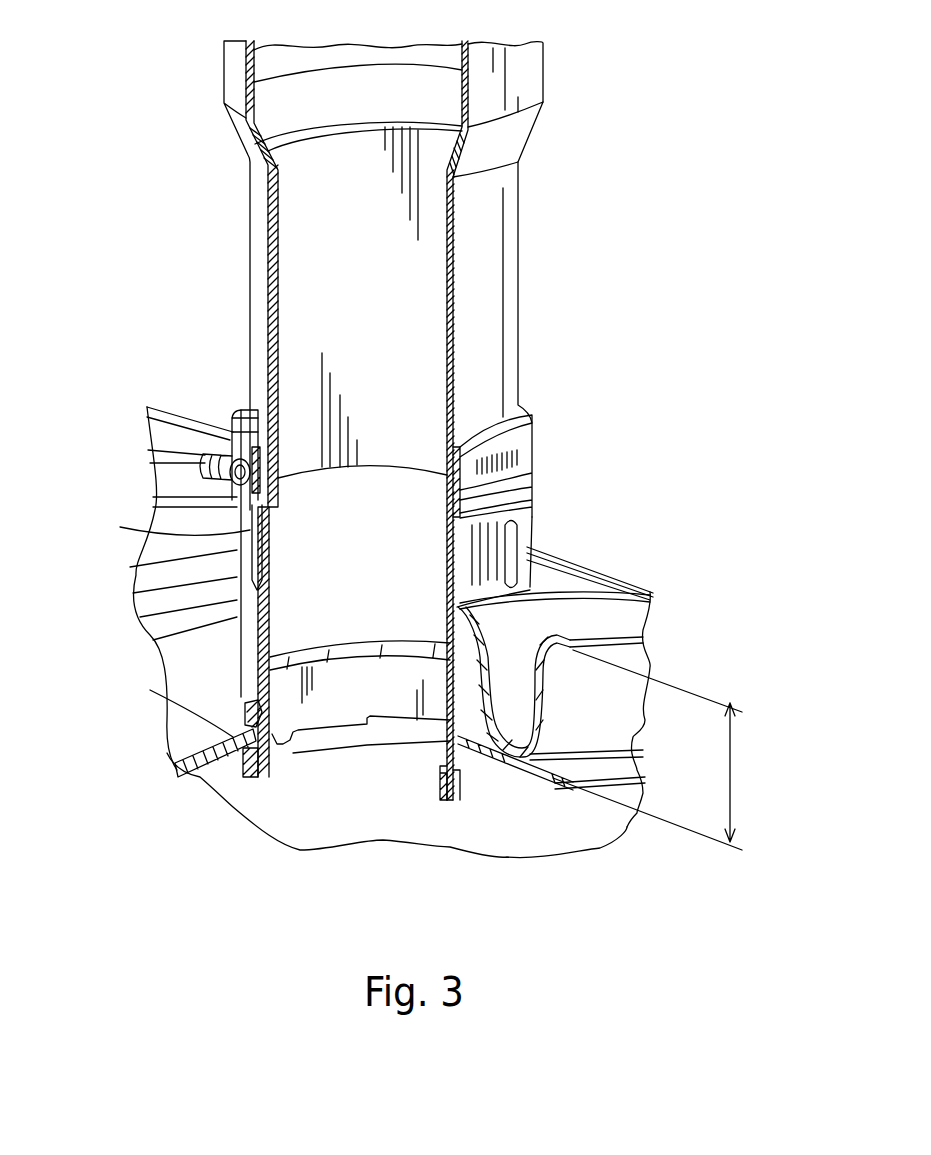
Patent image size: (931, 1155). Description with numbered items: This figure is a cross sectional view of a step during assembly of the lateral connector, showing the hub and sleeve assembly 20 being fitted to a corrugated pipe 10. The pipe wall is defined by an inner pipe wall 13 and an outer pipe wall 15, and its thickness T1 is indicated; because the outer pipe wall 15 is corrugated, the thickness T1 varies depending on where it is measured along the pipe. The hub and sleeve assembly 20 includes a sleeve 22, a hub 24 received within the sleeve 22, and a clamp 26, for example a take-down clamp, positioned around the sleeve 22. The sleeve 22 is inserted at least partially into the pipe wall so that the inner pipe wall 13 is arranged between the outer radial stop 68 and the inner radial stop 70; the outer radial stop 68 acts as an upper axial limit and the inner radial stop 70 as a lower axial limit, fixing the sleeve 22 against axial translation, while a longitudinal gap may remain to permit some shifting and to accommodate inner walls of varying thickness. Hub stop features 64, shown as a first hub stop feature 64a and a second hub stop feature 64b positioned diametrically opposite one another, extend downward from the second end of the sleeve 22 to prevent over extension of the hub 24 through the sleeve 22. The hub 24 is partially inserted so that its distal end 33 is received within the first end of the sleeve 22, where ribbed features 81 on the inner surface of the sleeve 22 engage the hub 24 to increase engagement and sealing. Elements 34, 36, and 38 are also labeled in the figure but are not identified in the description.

The corrugated pipe 10 is at (147, 600).
The inner pipe wall 13 is at (215, 776).
The outer pipe wall 15 is at (615, 622).
The hub and sleeve assembly 20 is at (158, 327).
The sleeve 22 is at (530, 530).
The hub 24 is at (224, 76).
The clamp 26 is at (520, 468).
The distal end 33 is at (255, 512).
The tube body 34 is at (518, 255).
The flange 36 is at (544, 68).
The conical portion 38 is at (515, 130).
The hub stop feature 64 is at (473, 785).
The first hub stop feature 64a is at (450, 783).
The second hub stop feature 64b is at (317, 745).
The outer radial stop 68 is at (240, 720).
The inner radial stop 70 is at (236, 775).
The ribbed features 81 is at (450, 477).
The thickness T1 is at (732, 768).